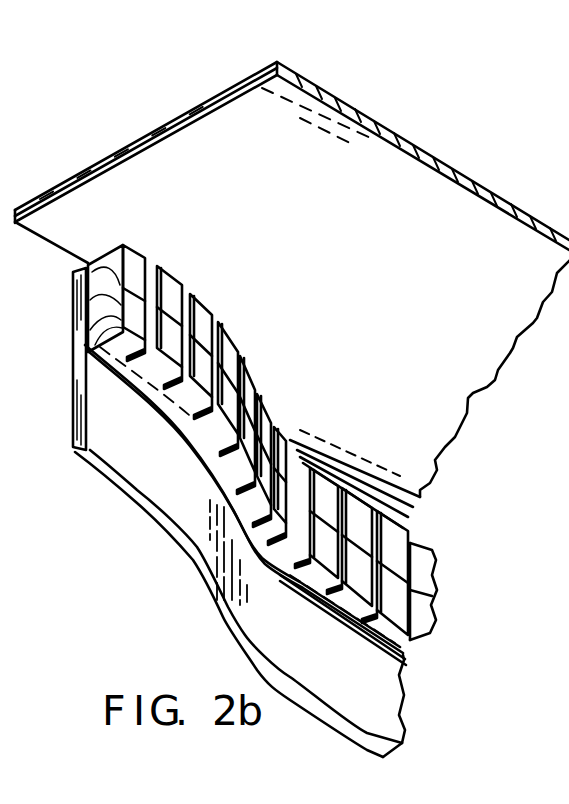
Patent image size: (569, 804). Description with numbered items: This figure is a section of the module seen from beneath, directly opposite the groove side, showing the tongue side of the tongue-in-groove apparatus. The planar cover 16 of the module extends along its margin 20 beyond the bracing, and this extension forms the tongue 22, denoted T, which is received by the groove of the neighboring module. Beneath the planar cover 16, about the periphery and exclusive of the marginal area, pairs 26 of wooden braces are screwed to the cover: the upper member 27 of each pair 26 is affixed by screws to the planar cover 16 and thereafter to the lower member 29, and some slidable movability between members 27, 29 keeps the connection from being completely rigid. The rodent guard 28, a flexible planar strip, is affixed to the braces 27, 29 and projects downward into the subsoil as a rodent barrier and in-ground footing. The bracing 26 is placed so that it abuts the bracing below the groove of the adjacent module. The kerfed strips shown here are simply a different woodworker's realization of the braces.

The planar cover 16 is at (325, 232).
The margin 20 is at (148, 140).
The tongue 22 is at (181, 118).
The pair of wooden braces 26 is at (100, 325).
The upper member 27 is at (198, 320).
The rodent guard 28 is at (312, 653).
The lower member 29 is at (152, 383).